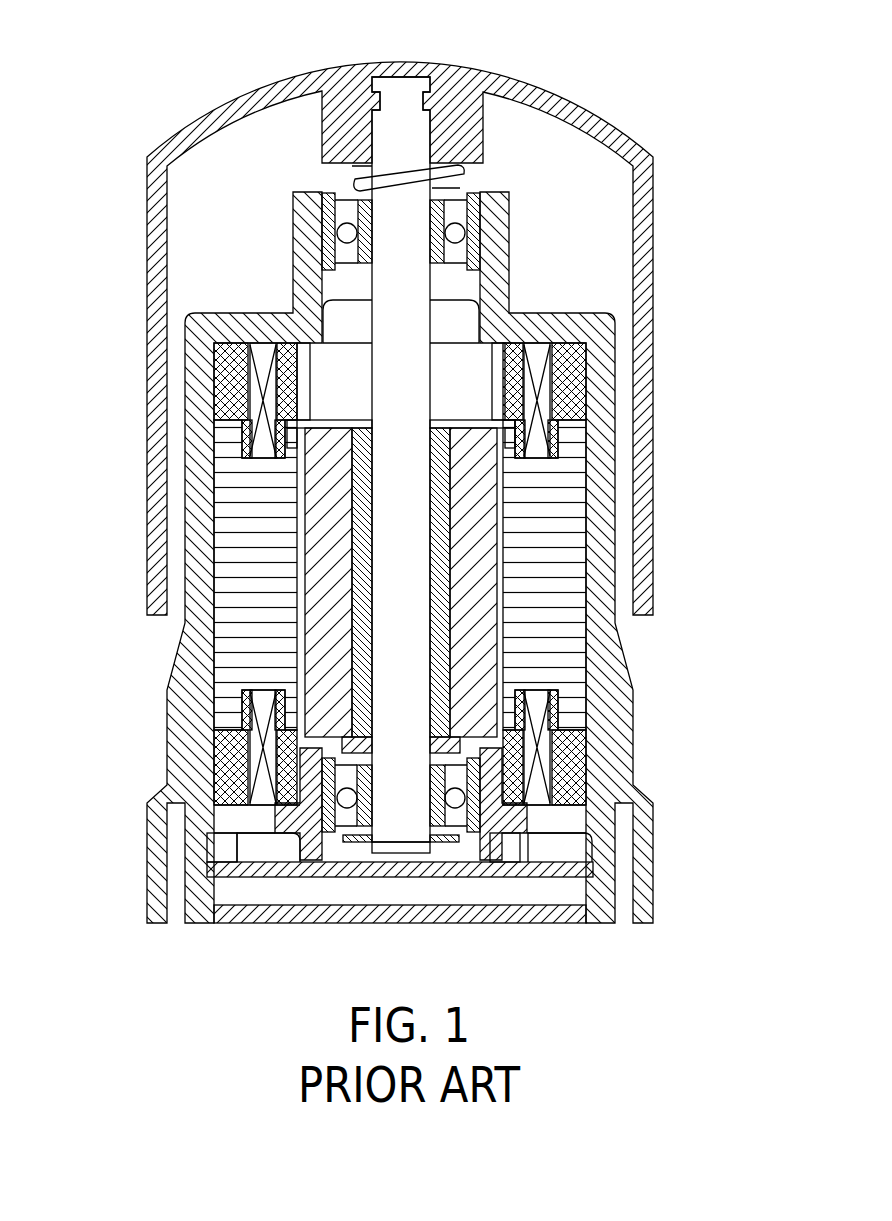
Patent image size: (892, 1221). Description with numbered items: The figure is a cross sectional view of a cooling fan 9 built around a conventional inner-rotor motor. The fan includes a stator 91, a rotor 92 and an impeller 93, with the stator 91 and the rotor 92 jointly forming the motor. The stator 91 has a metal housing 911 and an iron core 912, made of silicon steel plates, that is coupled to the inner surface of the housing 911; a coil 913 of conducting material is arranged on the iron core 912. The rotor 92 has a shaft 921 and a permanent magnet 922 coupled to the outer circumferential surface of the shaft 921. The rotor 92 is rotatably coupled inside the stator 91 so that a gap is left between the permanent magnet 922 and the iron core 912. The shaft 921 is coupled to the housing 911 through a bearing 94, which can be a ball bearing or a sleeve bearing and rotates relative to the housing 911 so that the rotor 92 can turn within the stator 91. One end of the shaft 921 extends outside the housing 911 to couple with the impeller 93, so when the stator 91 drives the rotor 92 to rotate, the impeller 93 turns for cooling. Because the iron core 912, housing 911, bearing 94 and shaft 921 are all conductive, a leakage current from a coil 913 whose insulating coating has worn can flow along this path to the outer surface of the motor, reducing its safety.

The cooling fan 9 is at (134, 377).
The stator 91 is at (710, 607).
The housing 911 is at (622, 697).
The iron core 912 is at (547, 608).
The coil 913 is at (535, 757).
The rotor 92 is at (717, 347).
The shaft 921 is at (403, 392).
The permanent magnet 922 is at (477, 483).
The impeller 93 is at (532, 88).
The bearing 94 is at (327, 190).